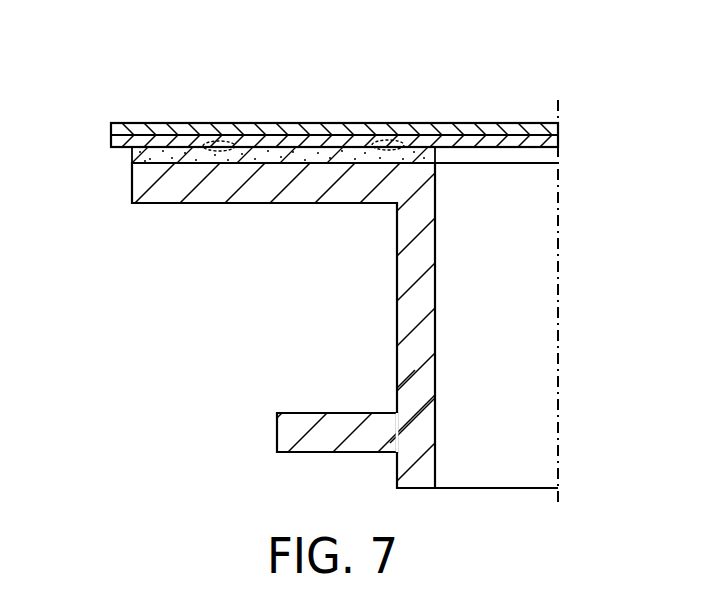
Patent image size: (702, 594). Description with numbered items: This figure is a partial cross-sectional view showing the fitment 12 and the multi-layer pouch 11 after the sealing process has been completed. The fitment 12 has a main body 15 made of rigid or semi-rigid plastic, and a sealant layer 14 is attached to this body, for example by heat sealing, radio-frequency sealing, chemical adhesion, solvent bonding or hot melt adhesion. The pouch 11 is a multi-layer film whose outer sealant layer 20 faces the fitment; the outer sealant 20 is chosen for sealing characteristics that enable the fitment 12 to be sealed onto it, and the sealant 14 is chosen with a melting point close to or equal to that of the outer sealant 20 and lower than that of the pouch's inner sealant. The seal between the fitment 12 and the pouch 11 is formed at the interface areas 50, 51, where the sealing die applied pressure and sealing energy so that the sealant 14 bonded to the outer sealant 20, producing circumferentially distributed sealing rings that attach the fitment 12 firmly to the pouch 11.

The multi-layer pouch 11 is at (501, 116).
The sealant layer 14 is at (111, 137).
The outer sealant layer 20 is at (558, 137).
The interface area 50 is at (396, 140).
The interface area 51 is at (232, 141).
The main body 15 is at (435, 378).
The fitment 12 is at (372, 463).